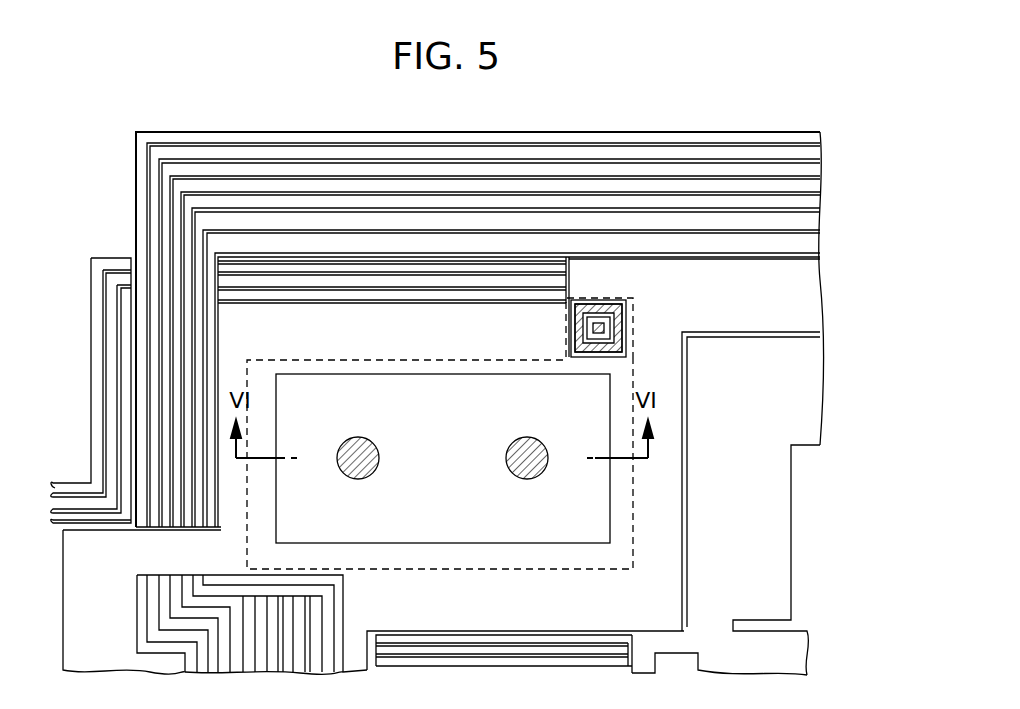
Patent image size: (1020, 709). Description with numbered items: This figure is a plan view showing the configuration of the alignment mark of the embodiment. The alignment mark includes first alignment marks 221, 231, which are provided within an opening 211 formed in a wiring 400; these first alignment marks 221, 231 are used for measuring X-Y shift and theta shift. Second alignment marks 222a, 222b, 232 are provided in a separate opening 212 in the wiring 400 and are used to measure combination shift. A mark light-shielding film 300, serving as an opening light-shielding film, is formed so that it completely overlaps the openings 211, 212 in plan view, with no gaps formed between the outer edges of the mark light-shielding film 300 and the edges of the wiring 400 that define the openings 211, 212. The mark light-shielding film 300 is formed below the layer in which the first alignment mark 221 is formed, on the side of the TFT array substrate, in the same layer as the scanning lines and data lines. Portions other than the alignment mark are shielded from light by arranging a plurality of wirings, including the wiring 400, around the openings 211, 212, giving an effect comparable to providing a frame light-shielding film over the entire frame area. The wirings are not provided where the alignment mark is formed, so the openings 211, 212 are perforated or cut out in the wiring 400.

The opening 211 is at (363, 374).
The opening 212 is at (623, 325).
The first alignment mark 221 is at (370, 476).
The second alignment mark 222a is at (618, 308).
The second alignment mark 222b is at (623, 352).
The first alignment mark 231 is at (521, 474).
The second alignment mark 232 is at (596, 328).
The mark light-shielding film 300 is at (572, 569).
The wiring 400 is at (812, 297).